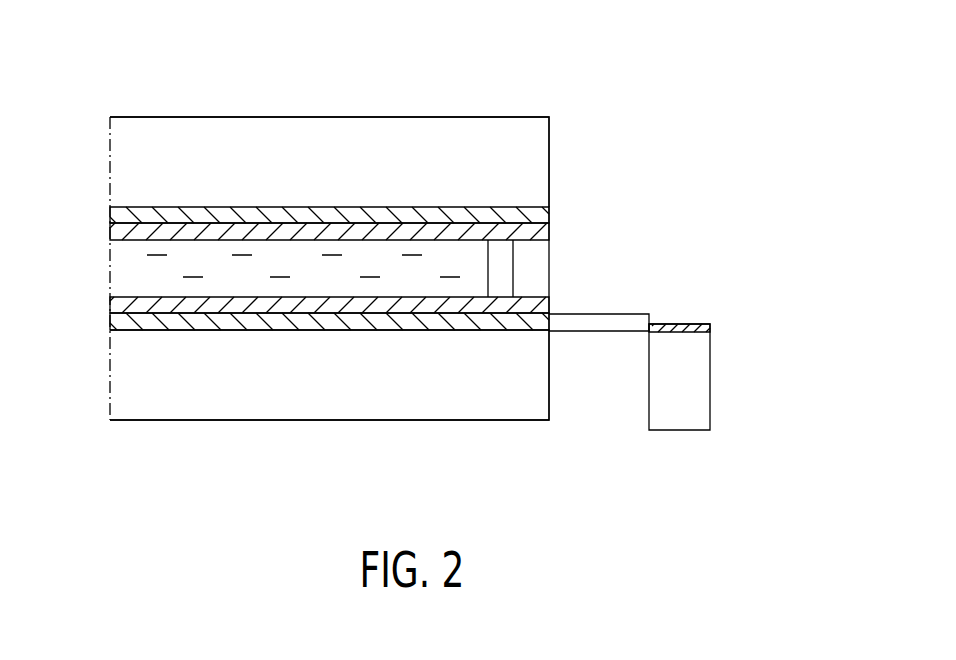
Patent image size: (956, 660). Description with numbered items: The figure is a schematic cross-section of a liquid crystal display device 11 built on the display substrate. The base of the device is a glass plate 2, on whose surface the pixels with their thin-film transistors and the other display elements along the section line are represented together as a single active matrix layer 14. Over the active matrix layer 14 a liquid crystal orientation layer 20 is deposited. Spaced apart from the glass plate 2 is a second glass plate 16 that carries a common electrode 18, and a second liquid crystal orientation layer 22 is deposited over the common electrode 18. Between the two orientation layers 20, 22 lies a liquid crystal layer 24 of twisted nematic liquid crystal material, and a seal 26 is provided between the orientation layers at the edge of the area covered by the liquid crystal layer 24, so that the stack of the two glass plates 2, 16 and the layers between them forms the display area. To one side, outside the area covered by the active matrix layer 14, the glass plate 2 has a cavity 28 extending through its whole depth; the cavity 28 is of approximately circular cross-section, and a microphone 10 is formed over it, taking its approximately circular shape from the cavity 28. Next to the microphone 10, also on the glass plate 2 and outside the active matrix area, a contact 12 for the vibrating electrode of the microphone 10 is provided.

The liquid crystal display device 11 is at (276, 62).
The second glass plate 16 is at (125, 147).
The common electrode 18 is at (125, 215).
The liquid crystal orientation layer 22 is at (123, 228).
The liquid crystal layer 24 is at (125, 272).
The seal 26 is at (503, 275).
The liquid crystal orientation layer 20 is at (125, 305).
The active matrix layer 14 is at (122, 321).
The glass plate 2 is at (125, 382).
The microphone 10 is at (627, 320).
The contact 12 is at (685, 322).
The cavity 28 is at (592, 388).